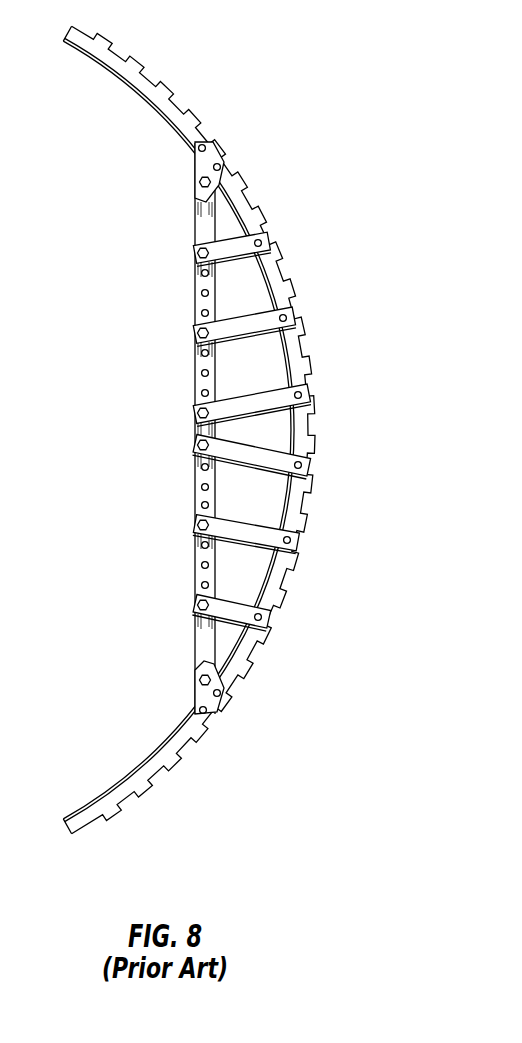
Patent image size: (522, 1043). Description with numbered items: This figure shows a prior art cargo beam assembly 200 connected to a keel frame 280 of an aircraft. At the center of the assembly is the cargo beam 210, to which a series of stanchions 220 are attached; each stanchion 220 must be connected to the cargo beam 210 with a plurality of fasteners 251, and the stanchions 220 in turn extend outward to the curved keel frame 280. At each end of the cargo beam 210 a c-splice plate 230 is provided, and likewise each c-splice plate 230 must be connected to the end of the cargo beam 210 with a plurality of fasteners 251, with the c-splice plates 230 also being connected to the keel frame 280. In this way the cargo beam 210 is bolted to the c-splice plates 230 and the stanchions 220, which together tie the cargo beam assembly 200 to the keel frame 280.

The cargo beam assembly 200 is at (148, 392).
The cargo beam 210 is at (203, 558).
The stanchion 220 is at (235, 530).
The c-splice plate 230 is at (203, 170).
The fastener 251 is at (218, 166).
The keel frame 280 is at (312, 384).